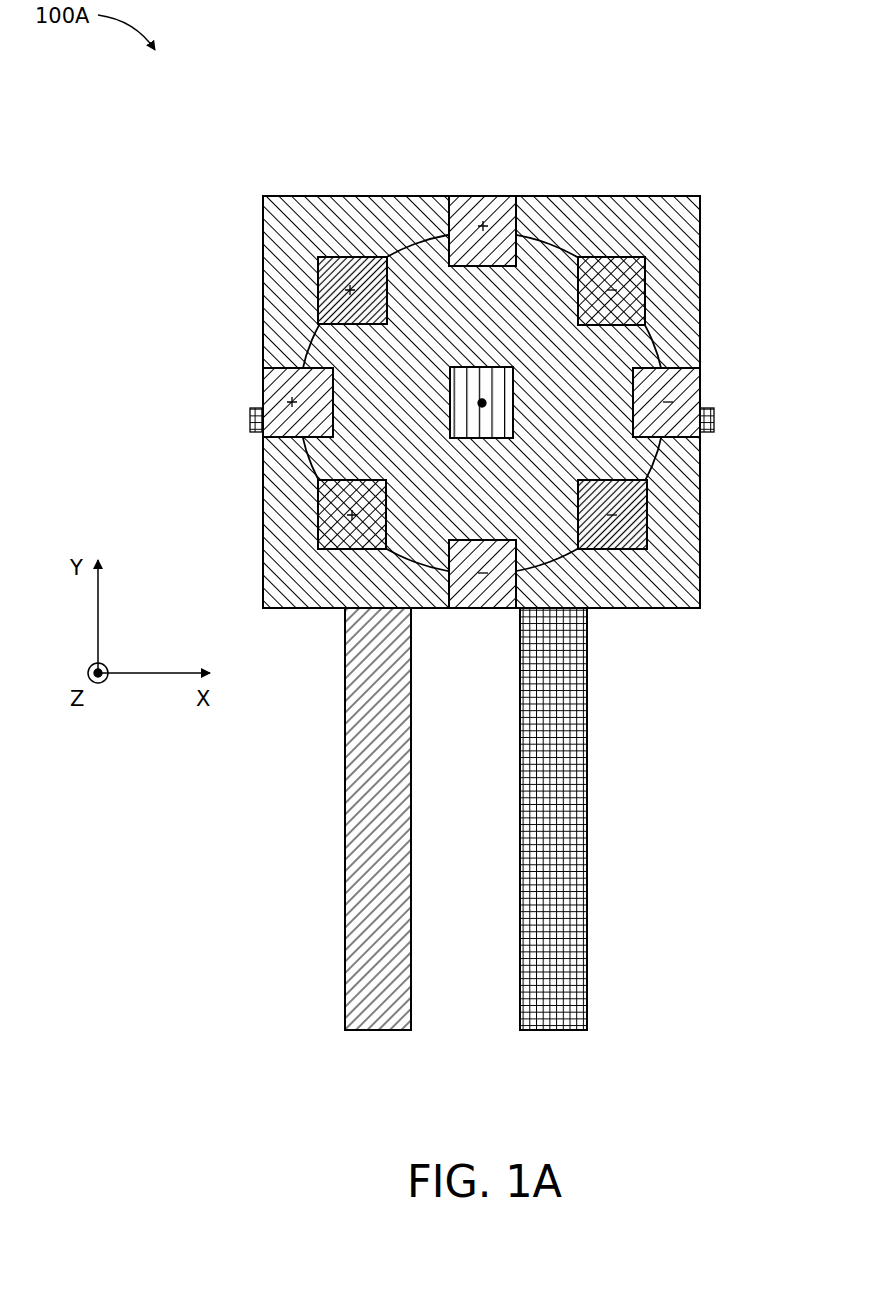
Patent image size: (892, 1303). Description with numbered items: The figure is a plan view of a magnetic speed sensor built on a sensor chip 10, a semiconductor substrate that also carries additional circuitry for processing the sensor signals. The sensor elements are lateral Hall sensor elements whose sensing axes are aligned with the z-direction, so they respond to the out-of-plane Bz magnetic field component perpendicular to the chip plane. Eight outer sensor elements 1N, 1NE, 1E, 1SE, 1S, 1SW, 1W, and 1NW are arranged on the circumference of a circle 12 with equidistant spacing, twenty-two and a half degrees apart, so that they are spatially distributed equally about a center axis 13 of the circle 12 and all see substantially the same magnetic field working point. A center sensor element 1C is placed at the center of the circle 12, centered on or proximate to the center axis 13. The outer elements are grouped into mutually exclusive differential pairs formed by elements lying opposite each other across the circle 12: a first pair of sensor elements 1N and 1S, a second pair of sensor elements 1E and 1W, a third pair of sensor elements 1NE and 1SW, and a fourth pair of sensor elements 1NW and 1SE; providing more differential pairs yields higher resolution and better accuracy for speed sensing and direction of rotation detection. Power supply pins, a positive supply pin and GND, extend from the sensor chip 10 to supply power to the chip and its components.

The sensor chip 10 is at (652, 196).
The circle 12 is at (422, 242).
The center axis 13 is at (486, 403).
The center sensor element 1C is at (508, 368).
The sensor element 1N is at (482, 200).
The sensor element 1S is at (482, 610).
The sensor element 1E is at (700, 388).
The sensor element 1W is at (273, 388).
The sensor element 1NE is at (644, 293).
The sensor element 1NW is at (322, 290).
The sensor element 1SE is at (645, 517).
The sensor element 1SW is at (320, 514).
The power supply pin GND is at (588, 805).